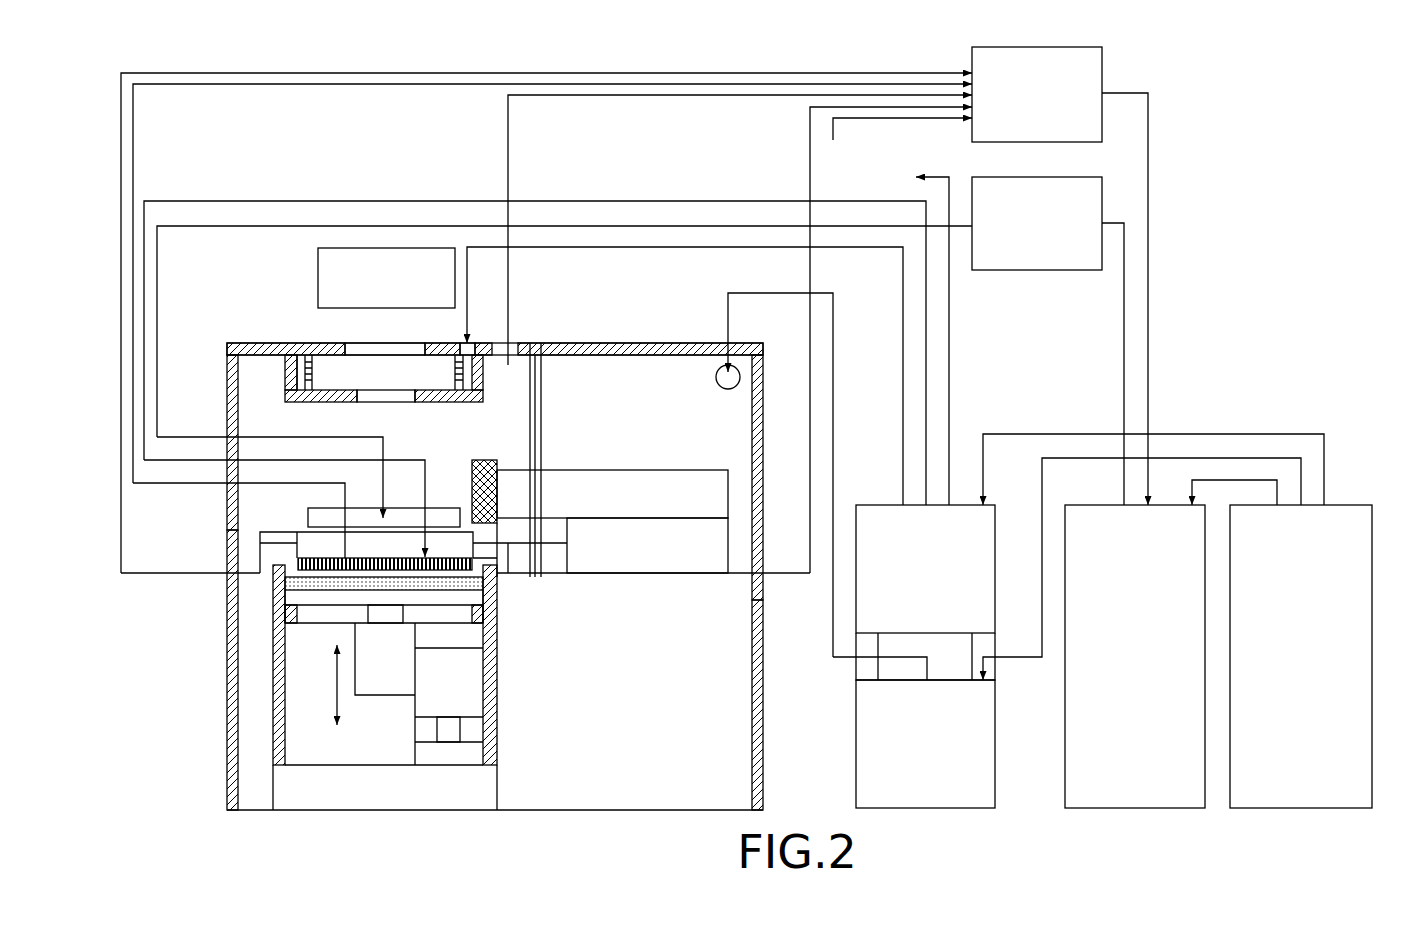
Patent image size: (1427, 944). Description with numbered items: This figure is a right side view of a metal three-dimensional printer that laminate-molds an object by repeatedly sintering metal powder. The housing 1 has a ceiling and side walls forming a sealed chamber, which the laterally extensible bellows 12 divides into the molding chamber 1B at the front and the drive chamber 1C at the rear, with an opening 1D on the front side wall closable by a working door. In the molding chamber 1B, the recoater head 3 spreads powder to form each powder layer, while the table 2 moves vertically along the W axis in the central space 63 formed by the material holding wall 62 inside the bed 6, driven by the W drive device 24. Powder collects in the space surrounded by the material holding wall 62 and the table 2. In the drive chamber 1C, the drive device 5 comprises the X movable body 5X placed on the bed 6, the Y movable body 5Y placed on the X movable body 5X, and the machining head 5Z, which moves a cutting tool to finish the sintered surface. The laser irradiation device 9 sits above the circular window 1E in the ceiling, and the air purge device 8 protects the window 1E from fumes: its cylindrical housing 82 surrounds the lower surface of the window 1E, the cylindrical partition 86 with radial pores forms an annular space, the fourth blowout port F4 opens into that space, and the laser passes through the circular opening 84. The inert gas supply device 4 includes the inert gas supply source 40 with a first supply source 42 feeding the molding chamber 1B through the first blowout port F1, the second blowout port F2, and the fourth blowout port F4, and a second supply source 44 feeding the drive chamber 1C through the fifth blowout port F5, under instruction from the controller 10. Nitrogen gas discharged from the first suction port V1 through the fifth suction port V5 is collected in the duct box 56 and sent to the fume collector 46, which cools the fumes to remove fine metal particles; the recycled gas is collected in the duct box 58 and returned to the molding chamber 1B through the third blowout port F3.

The housing 1 is at (229, 365).
The molding chamber 1B is at (247, 392).
The drive chamber 1C is at (660, 360).
The opening 1D is at (228, 528).
The window 1E is at (390, 345).
The table 2 is at (480, 592).
The recoater head 3 is at (379, 531).
The inert gas supply device 4 is at (995, 661).
The drive device 5 is at (600, 522).
The X movable body 5X is at (630, 565).
The Y movable body 5Y is at (667, 475).
The machining head 5Z is at (498, 515).
The bed 6 is at (768, 677).
The air purge device 8 is at (357, 356).
The laser irradiation device 9 is at (318, 270).
The controller 10 is at (1344, 505).
The bellows 12 is at (547, 368).
The W drive device 24 is at (408, 707).
The inert gas supply source 40 is at (890, 640).
The first supply source 42 is at (890, 508).
The second supply source 44 is at (857, 778).
The fume collector 46 is at (1129, 806).
The duct box 56 is at (1102, 68).
The duct box 58 is at (1102, 195).
The material holding wall 62 is at (273, 707).
The central space 63 is at (315, 728).
The cylindrical housing 82 is at (290, 356).
The circular opening 84 is at (385, 400).
The cylindrical partition 86 is at (307, 358).
The first blowout port F1 is at (313, 558).
The second blowout port F2 is at (918, 335).
The third blowout port F3 is at (455, 520).
The fourth blowout port F4 is at (681, 376).
The fifth blowout port F5 is at (774, 475).
The first suction port V1 is at (897, 144).
The fifth suction port V5 is at (528, 345).
The W axis W is at (325, 685).